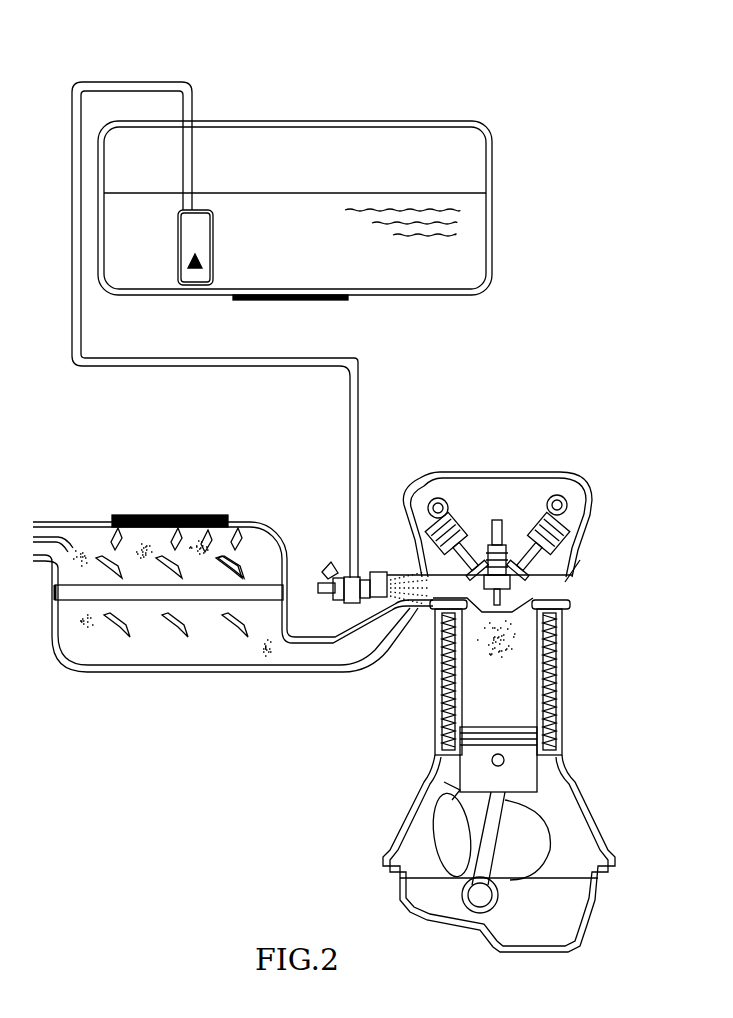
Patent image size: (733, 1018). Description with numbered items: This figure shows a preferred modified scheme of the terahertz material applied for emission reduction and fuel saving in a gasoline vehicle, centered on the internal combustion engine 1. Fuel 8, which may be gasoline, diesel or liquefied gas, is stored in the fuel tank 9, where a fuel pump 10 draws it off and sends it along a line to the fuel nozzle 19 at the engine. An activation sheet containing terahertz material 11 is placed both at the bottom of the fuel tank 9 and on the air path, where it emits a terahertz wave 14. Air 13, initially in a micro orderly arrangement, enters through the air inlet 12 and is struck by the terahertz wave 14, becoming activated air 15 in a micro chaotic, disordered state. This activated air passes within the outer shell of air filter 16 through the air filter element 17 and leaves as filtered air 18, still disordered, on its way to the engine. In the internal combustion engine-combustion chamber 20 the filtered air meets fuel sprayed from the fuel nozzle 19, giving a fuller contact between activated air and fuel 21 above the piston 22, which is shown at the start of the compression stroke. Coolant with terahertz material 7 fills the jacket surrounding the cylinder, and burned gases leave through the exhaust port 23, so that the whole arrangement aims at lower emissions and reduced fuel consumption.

The internal combustion engine 1 is at (485, 470).
The coolant with terahertz material 7 is at (433, 643).
The fuel 8 is at (420, 208).
The fuel tank 9 is at (230, 120).
The fuel pump 10 is at (212, 255).
The activation sheet containing terahertz material 11 is at (270, 293).
The air inlet 12 is at (48, 522).
The air 13 is at (87, 550).
The terahertz wave 14 is at (155, 545).
The activated air 15 is at (210, 537).
The outer shell of air filter 16 is at (238, 552).
The air filter element 17 is at (247, 585).
The filtered air 18 is at (250, 657).
The fuel nozzle 19 is at (357, 575).
The internal combustion engine-combustion chamber 20 is at (487, 653).
The fuller contact between activated air and fuel 21 is at (435, 728).
The piston/compression stroke start 22 is at (565, 703).
The exhaust port 23 is at (565, 582).